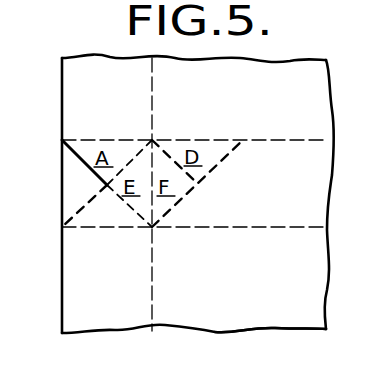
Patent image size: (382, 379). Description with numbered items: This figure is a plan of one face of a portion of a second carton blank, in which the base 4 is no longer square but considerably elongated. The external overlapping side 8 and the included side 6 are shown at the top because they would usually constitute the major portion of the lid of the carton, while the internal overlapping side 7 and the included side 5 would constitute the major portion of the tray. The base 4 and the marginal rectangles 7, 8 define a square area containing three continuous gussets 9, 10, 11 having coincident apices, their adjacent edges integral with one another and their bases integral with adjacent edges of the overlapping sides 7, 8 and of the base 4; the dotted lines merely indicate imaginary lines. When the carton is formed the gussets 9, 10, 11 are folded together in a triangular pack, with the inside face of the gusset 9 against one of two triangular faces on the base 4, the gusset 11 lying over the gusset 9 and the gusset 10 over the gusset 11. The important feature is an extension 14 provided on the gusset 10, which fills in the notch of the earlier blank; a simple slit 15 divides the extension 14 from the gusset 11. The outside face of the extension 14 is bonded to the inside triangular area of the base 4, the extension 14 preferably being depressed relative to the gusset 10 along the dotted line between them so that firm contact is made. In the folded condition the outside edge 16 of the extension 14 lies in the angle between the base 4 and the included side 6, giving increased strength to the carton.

The base 4 is at (381, 164).
The included side 5 is at (234, 286).
The included side 6 is at (258, 98).
The internal overlapping side 7 is at (95, 295).
The external overlapping side 8 is at (97, 76).
The gusset 9 is at (150, 208).
The gusset 10 is at (108, 217).
The gusset 11 is at (88, 152).
The extension 14 is at (80, 183).
The slit 15 is at (78, 158).
The outside edge 16 is at (62, 212).